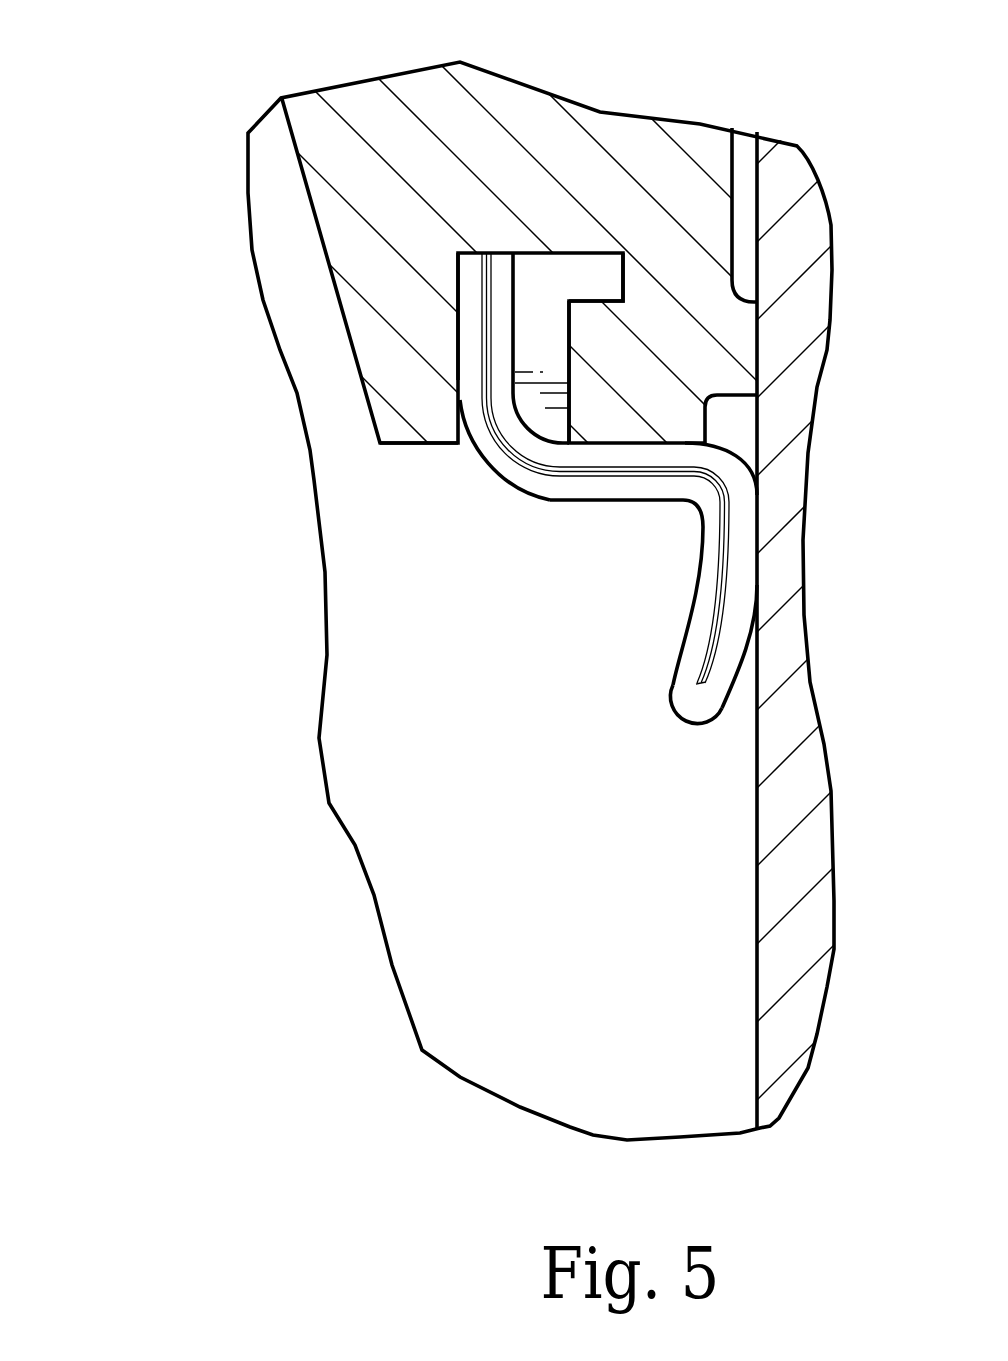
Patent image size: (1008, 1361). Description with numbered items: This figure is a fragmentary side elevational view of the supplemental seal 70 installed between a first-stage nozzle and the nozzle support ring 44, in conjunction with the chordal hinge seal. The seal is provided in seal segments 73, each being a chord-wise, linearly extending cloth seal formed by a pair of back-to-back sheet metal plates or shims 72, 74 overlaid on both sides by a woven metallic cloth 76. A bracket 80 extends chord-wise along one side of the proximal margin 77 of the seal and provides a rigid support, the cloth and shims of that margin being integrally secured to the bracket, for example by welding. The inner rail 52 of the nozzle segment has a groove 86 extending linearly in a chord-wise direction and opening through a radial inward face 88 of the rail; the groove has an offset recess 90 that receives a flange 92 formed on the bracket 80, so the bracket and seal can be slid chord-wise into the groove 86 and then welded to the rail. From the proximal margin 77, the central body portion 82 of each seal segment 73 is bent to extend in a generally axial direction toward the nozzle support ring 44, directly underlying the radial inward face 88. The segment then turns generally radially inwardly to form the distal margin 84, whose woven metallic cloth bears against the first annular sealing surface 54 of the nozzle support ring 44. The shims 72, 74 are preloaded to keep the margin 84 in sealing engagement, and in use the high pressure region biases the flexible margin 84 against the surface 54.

The nozzle support ring 44 is at (797, 627).
The inner rail 52 is at (355, 100).
The first annular surface 54 is at (757, 822).
The supplemental seal 70 is at (459, 488).
The sheet metal plate or shim 72 is at (620, 478).
The seal segment 73 is at (458, 337).
The sheet metal plate or shim 74 is at (737, 533).
The woven metallic cloth 76 is at (475, 398).
The proximal margin 77 is at (470, 293).
The bracket 80 is at (547, 410).
The central body portion 82 is at (568, 488).
The distal margin 84 is at (693, 657).
The groove 86 is at (548, 330).
The radial inward face 88 is at (410, 447).
The offset recess 90 is at (622, 290).
The flange 92 is at (585, 270).